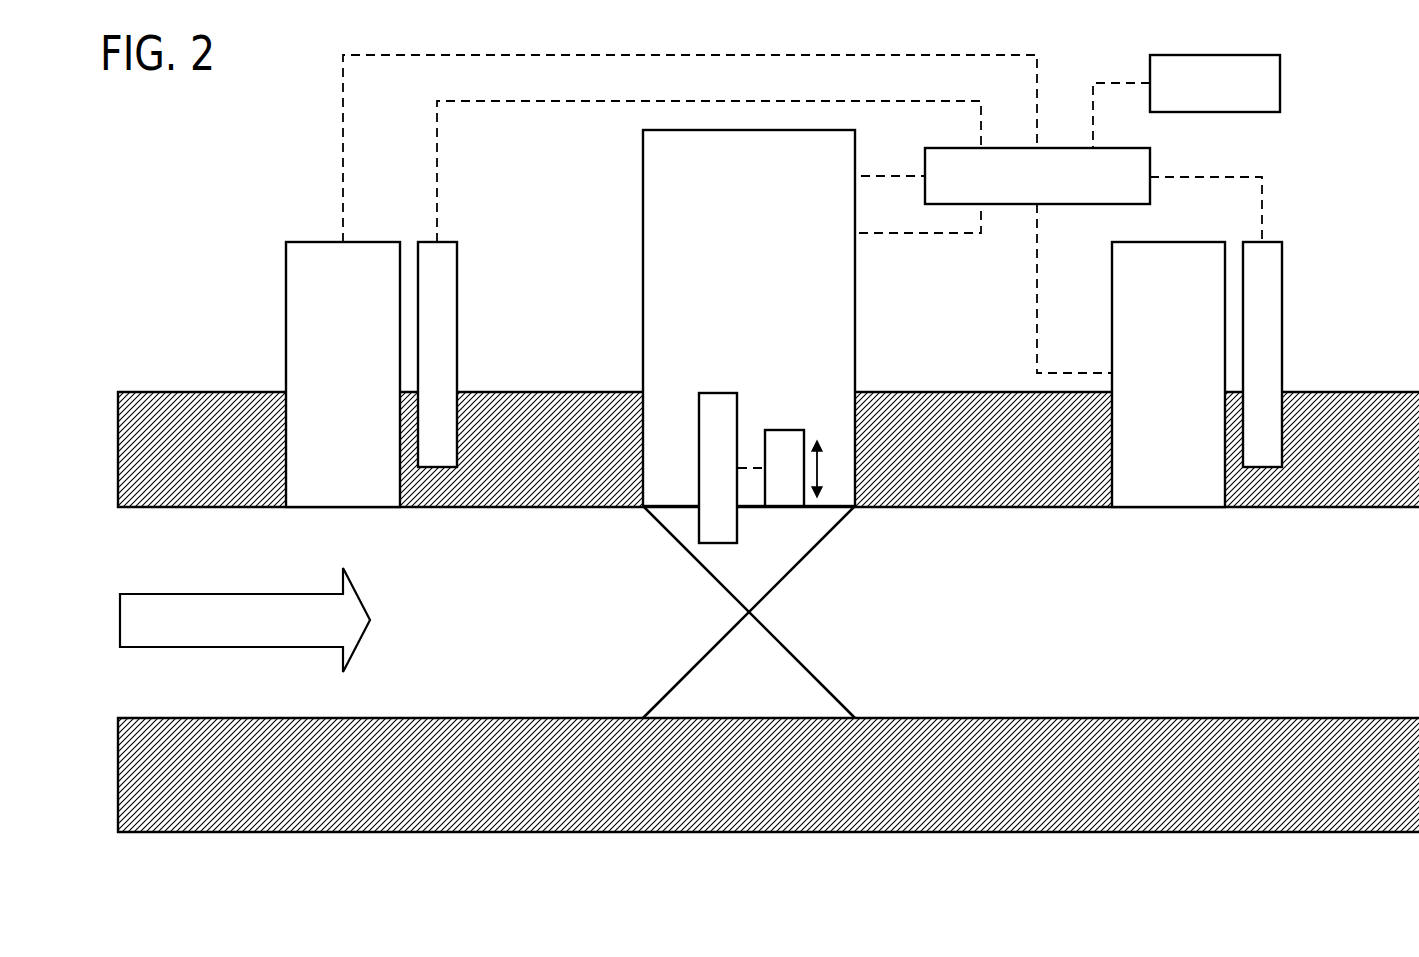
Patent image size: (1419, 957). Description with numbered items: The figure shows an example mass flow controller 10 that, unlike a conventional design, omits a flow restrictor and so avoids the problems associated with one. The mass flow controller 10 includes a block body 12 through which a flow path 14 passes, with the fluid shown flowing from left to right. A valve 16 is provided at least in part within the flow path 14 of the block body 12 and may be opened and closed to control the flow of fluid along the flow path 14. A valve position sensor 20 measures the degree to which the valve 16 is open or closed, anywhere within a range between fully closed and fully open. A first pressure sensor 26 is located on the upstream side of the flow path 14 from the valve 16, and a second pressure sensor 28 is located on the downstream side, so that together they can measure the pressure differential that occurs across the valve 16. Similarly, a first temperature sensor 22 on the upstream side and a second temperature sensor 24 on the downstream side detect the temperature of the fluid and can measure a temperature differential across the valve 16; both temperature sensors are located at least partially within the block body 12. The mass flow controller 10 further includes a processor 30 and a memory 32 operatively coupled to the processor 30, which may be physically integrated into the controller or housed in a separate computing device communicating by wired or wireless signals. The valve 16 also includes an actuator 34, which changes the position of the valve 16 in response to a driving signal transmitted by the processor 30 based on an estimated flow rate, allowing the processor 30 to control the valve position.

The mass flow controller 10 is at (170, 243).
The block body 12 is at (773, 833).
The flow path 14 is at (231, 632).
The valve 16 is at (716, 582).
The valve position sensor 20 is at (699, 468).
The first temperature sensor 22 is at (458, 355).
The second temperature sensor 24 is at (1283, 355).
The first pressure sensor 26 is at (331, 386).
The second pressure sensor 28 is at (1156, 386).
The processor 30 is at (1025, 188).
The memory 32 is at (1203, 95).
The actuator 34 is at (785, 508).